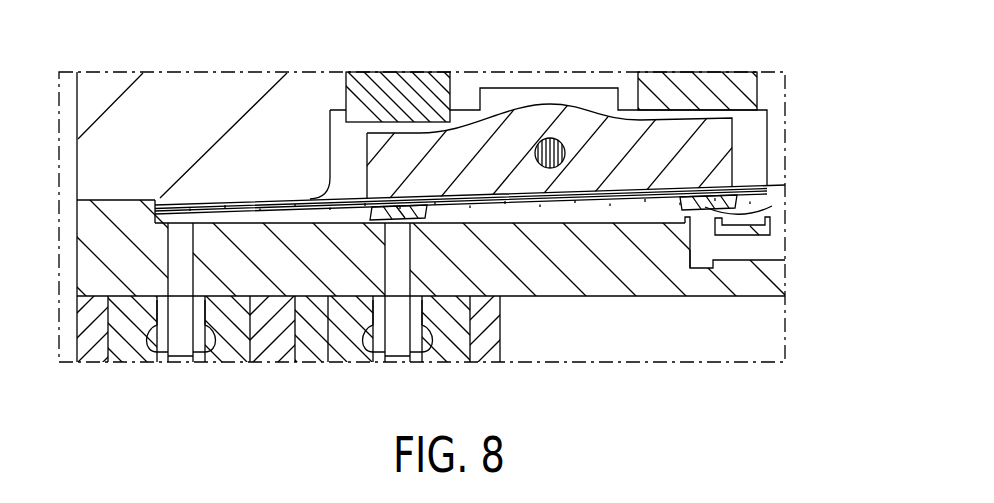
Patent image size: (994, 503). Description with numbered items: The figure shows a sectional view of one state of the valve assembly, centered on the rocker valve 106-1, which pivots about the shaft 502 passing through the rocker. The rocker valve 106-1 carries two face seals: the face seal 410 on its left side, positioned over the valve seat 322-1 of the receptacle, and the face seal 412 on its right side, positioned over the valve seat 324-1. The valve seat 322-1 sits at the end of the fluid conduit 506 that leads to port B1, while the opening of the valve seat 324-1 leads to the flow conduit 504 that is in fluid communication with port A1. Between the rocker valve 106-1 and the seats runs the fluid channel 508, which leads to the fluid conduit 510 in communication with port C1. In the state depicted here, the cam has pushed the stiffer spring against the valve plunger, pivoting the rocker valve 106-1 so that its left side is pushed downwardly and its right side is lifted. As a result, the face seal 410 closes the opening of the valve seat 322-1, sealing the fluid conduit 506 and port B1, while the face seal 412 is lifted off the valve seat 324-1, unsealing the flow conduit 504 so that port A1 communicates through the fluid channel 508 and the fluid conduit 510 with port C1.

The rocker valve 106-1 is at (614, 148).
The shaft 502 is at (558, 148).
The face seal 410 is at (385, 234).
The face seal 412 is at (776, 211).
The flow conduit 504 is at (758, 247).
The valve seat 324-1 is at (702, 226).
The valve seat 322-1 is at (403, 235).
The fluid channel 508 is at (530, 213).
The fluid conduit 506 is at (397, 303).
The fluid conduit 510 is at (180, 305).